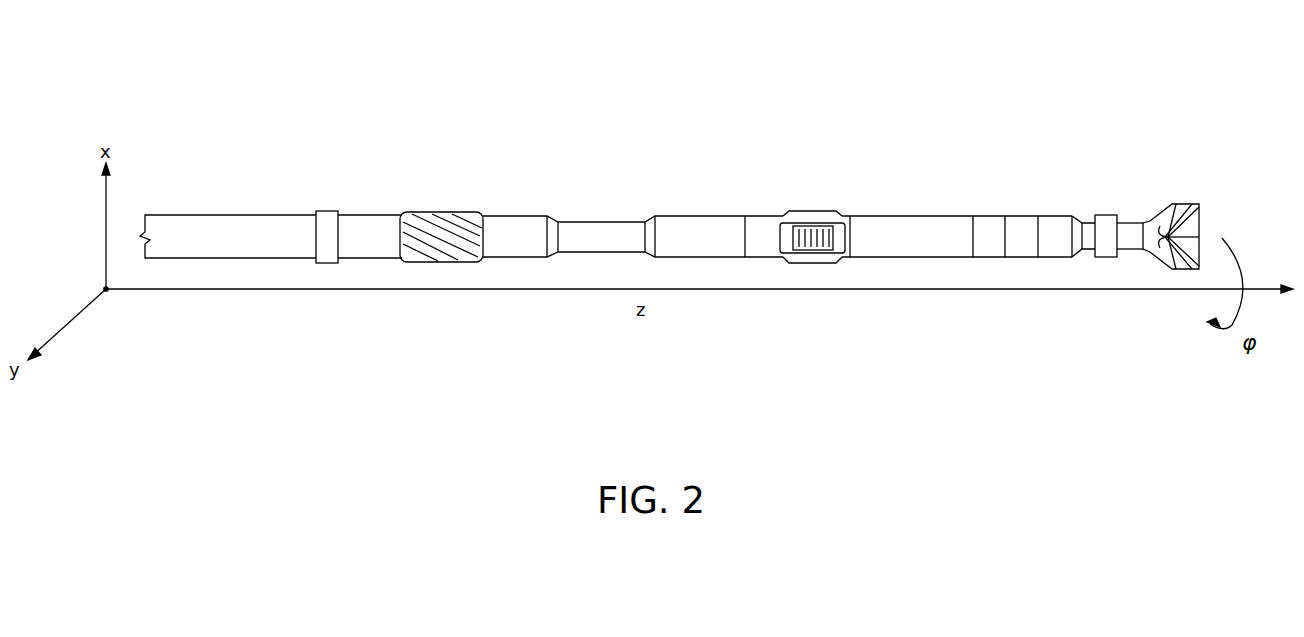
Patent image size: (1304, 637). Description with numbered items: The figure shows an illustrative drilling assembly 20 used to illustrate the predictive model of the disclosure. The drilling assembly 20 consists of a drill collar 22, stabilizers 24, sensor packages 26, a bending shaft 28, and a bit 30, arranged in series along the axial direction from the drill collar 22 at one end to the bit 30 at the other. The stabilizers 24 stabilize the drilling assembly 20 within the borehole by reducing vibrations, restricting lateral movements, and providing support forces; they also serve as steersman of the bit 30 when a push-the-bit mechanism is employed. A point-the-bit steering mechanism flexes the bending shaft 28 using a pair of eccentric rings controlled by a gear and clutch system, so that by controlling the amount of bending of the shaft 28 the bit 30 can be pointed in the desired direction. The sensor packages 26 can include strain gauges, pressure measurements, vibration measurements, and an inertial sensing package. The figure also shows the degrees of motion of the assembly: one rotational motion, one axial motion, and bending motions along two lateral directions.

The drilling assembly 20 is at (336, 63).
The drill collar 22 is at (257, 214).
The stabilizers 24 is at (423, 211).
The sensor packages 26 is at (803, 210).
The bending shaft 28 is at (1088, 220).
The bit 30 is at (1178, 203).